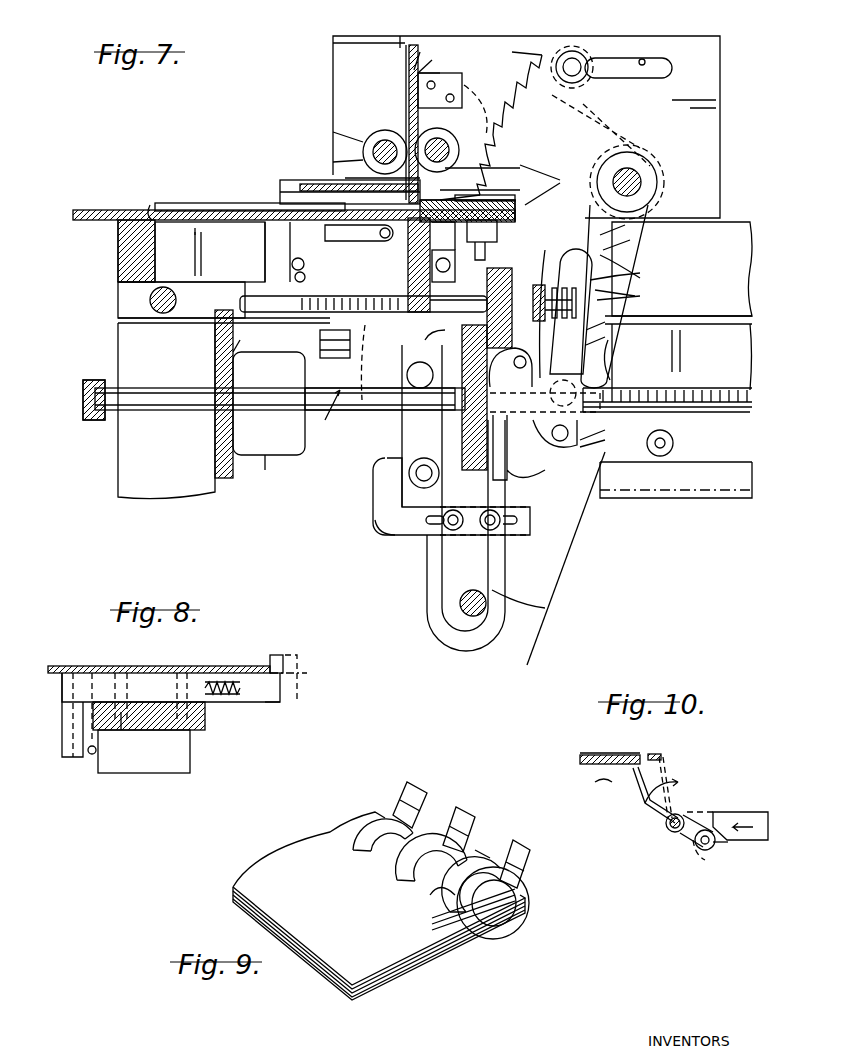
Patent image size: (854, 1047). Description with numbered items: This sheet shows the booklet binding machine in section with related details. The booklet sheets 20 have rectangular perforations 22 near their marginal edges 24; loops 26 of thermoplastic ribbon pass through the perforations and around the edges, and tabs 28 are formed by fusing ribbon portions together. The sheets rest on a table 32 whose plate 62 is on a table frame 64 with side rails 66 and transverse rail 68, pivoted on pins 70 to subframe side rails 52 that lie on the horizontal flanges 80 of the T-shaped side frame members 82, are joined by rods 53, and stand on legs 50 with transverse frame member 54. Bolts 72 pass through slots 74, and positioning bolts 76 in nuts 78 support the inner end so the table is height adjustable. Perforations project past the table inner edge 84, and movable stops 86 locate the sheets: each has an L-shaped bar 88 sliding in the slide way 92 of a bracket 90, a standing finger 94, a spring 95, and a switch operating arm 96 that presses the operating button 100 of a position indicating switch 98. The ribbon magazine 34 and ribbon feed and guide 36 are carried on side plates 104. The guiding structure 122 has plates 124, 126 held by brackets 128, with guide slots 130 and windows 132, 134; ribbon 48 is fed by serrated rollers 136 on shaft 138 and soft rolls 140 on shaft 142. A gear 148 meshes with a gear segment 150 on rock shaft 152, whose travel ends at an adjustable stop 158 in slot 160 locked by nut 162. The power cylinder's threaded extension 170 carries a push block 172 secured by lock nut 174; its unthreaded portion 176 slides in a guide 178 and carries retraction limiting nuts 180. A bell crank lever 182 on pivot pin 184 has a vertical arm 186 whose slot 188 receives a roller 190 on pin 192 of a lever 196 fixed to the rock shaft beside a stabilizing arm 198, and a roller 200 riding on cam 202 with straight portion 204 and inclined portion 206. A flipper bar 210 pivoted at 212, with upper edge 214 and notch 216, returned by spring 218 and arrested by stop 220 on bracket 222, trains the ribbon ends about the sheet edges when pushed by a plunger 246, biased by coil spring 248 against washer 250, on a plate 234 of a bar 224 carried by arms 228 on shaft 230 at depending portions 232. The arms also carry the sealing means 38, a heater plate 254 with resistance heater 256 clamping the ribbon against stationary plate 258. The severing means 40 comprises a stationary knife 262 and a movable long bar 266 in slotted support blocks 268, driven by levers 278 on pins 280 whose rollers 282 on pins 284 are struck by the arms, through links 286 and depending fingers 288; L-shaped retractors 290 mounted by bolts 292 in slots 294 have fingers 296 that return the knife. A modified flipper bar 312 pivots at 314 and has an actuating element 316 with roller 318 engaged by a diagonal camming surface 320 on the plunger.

In FIG. 7, the sheets 20 is at (186, 204).
In FIG. 9, the sheets 20 is at (262, 878).
In FIG. 10, the sheets 20 is at (590, 752).
In FIG. 7, the rectangular perforations 22 is at (444, 251).
In FIG. 9, the rectangular perforations 22 is at (445, 902).
In FIG. 10, the rectangular perforations 22 is at (648, 756).
In FIG. 7, the marginal edges 24 is at (446, 211).
In FIG. 9, the marginal edges 24 is at (478, 850).
In FIG. 10, the marginal edges 24 is at (668, 756).
In FIG. 9, the loops 26 is at (395, 863).
In FIG. 9, the tabs 28 is at (424, 800).
In FIG. 7, the table 32 is at (96, 205).
In FIG. 8, the table 32 is at (72, 661).
In FIG. 10, the table 32 is at (574, 766).
In FIG. 7, the ribbon magazine 34 is at (722, 34).
In FIG. 7, the ribbon feed and guide 36 is at (436, 72).
In FIG. 7, the sealing means 38 is at (551, 189).
In FIG. 7, the ribbon severing means 40 is at (340, 173).
In FIG. 7, the ribbon 48 is at (405, 45).
In FIG. 7, the legs 50 is at (125, 462).
In FIG. 7, the side rails 52 is at (740, 253).
In FIG. 7, the rods 53 is at (150, 298).
In FIG. 7, the transverse frame member 54 is at (215, 436).
In FIG. 7, the plate 62 is at (210, 252).
In FIG. 8, the plate 62 is at (120, 672).
In FIG. 7, the table frame 64 is at (108, 282).
In FIG. 7, the side rails 66 is at (152, 212).
In FIG. 7, the transverse rail 68 is at (116, 266).
In FIG. 7, the pins 70 is at (116, 240).
In FIG. 7, the bolts 72 is at (285, 256).
In FIG. 7, the slots 74 is at (363, 304).
In FIG. 7, the positioning bolts 76 is at (300, 385).
In FIG. 7, the nuts 78 is at (318, 338).
In FIG. 7, the horizontal flanges 80 is at (125, 323).
In FIG. 7, the side frame members 82 is at (321, 420).
In FIG. 8, the inner edge 84 is at (302, 673).
In FIG. 8, the movable stops 86 is at (265, 710).
In FIG. 8, the L-shaped bar 88 is at (160, 676).
In FIG. 8, the bracket 90 is at (200, 730).
In FIG. 8, the slide way 92 is at (142, 705).
In FIG. 8, the standing finger 94 is at (276, 655).
In FIG. 8, the spring 95 is at (228, 681).
In FIG. 8, the switch operating arm 96 is at (60, 745).
In FIG. 8, the position indicating switch 98 is at (150, 773).
In FIG. 8, the operating button 100 is at (90, 757).
In FIG. 7, the side plates 104 is at (333, 43).
In FIG. 7, the guiding structure 122 is at (416, 68).
In FIG. 7, the plate 124 is at (438, 67).
In FIG. 7, the plate 126 is at (408, 100).
In FIG. 7, the brackets 128 is at (462, 80).
In FIG. 7, the slots 130 is at (408, 78).
In FIG. 7, the windows 132 is at (491, 126).
In FIG. 7, the windows 134 is at (386, 130).
In FIG. 7, the serrated rollers 136 is at (458, 150).
In FIG. 7, the shaft 138 is at (450, 140).
In FIG. 7, the soft rolls 140 is at (360, 138).
In FIG. 7, the shaft 142 is at (362, 150).
In FIG. 7, the gear 148 is at (484, 103).
In FIG. 7, the gear segment 150 is at (600, 100).
In FIG. 7, the rock shaft 152 is at (627, 182).
In FIG. 7, the adjustable stop 158 is at (574, 52).
In FIG. 7, the slot 160 is at (645, 58).
In FIG. 7, the nut 162 is at (640, 58).
In FIG. 7, the threaded extension 170 is at (688, 388).
In FIG. 7, the push block 172 is at (515, 420).
In FIG. 7, the lock nut 174 is at (603, 434).
In FIG. 7, the unthreaded portion 176 is at (172, 388).
In FIG. 7, the guide 178 is at (260, 469).
In FIG. 7, the retraction limiting nuts 180 is at (82, 382).
In FIG. 7, the bell crank lever 182 is at (617, 357).
In FIG. 7, the pivot pin 184 is at (560, 442).
In FIG. 7, the vertically extending arm 186 is at (629, 293).
In FIG. 7, the slot 188 is at (631, 270).
In FIG. 7, the roller 190 is at (667, 390).
In FIG. 7, the pin 192 is at (545, 401).
In FIG. 7, the lever 196 is at (650, 230).
In FIG. 7, the stabilizing arm 198 is at (655, 196).
In FIG. 7, the roller 200 is at (673, 440).
In FIG. 7, the cam 202 is at (722, 495).
In FIG. 7, the straight portion 204 is at (700, 462).
In FIG. 7, the inclined portion 206 is at (645, 466).
In FIG. 7, the flipper bar 210 is at (405, 258).
In FIG. 7, the pivot 212 is at (536, 285).
In FIG. 7, the upper edge 214 is at (480, 176).
In FIG. 7, the notch 216 is at (481, 240).
In FIG. 10, the notch 216 is at (585, 785).
In FIG. 7, the spring 218 is at (251, 360).
In FIG. 7, the stop 220 is at (377, 362).
In FIG. 7, the bracket 222 is at (262, 243).
In FIG. 7, the bar 224 is at (480, 475).
In FIG. 7, the arms 228 is at (534, 603).
In FIG. 7, the shaft 230 is at (473, 617).
In FIG. 7, the depending portions 232 is at (427, 581).
In FIG. 7, the plate 234 is at (500, 300).
In FIG. 7, the plunger 246 is at (460, 312).
In FIG. 10, the plunger 246 is at (740, 812).
In FIG. 7, the coil spring 248 is at (532, 377).
In FIG. 7, the washer 250 is at (560, 262).
In FIG. 7, the heater plate 254 is at (535, 185).
In FIG. 7, the resistance heater 256 is at (512, 198).
In FIG. 7, the stationary plate 258 is at (359, 233).
In FIG. 7, the stationary knife 262 is at (488, 158).
In FIG. 7, the long bar 266 is at (280, 192).
In FIG. 7, the slotted support blocks 268 is at (300, 186).
In FIG. 7, the levers 278 is at (410, 440).
In FIG. 7, the pins 280 is at (400, 410).
In FIG. 7, the rollers 282 is at (412, 478).
In FIG. 7, the pins 284 is at (451, 496).
In FIG. 7, the links 286 is at (292, 260).
In FIG. 7, the depending fingers 288 is at (265, 235).
In FIG. 7, the L-shaped retractors 290 is at (408, 541).
In FIG. 7, the bolts 292 is at (456, 529).
In FIG. 7, the slot 294 is at (505, 522).
In FIG. 7, the finger 296 is at (420, 388).
In FIG. 10, the modified flipper bar 312 is at (652, 807).
In FIG. 10, the pivot 314 is at (668, 830).
In FIG. 10, the actuating element 316 is at (695, 848).
In FIG. 10, the roller 318 is at (702, 850).
In FIG. 10, the diagonal camming surface 320 is at (723, 840).